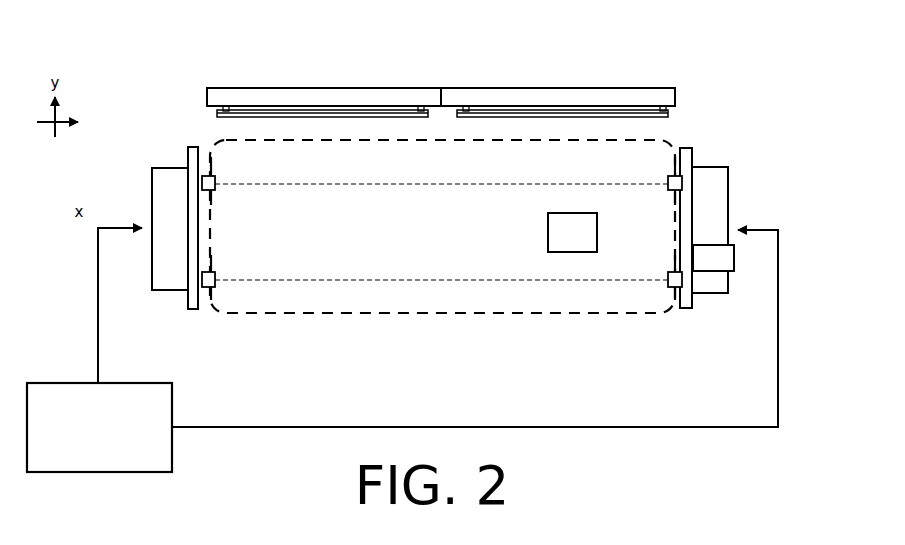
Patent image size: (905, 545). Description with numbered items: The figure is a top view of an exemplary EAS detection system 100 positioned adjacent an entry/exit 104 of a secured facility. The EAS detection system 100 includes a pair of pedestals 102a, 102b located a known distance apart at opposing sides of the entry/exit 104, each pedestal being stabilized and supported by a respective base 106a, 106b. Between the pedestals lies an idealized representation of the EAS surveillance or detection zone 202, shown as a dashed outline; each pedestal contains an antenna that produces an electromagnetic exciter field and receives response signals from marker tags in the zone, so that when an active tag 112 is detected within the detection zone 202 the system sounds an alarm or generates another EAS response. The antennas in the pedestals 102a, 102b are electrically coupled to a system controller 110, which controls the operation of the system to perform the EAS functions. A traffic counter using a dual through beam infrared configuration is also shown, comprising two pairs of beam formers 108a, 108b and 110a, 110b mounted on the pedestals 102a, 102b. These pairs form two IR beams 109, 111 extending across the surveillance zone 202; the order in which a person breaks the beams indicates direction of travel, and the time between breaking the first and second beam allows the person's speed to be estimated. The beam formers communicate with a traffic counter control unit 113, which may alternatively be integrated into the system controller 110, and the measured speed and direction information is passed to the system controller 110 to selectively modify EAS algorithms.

The EAS detection system 100 is at (731, 71).
The pedestal 102a is at (187, 292).
The pedestal 102b is at (693, 306).
The entry/exit 104 is at (585, 88).
The base 106a is at (151, 178).
The base 106b is at (705, 167).
The beam former 108a is at (215, 272).
The beam former 108b is at (668, 272).
The IR beam 109 is at (438, 280).
The system controller 110 is at (402, 350).
The beam former 110a is at (215, 176).
The beam former 110b is at (668, 177).
The IR beam 111 is at (513, 184).
The active tag 112 is at (572, 232).
The traffic counter control unit 113 is at (713, 258).
The surveillance or detection zone 202 is at (476, 314).